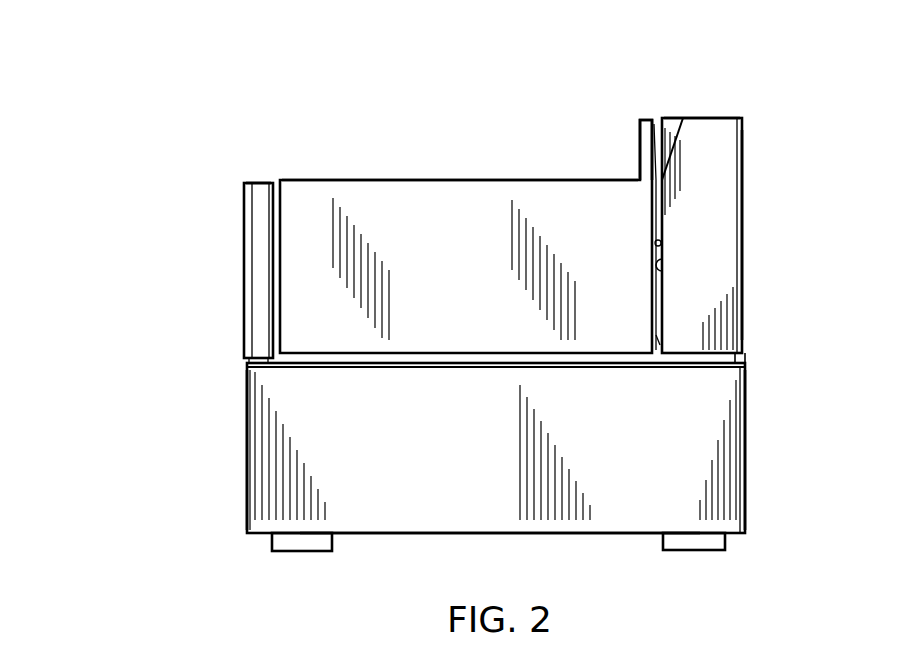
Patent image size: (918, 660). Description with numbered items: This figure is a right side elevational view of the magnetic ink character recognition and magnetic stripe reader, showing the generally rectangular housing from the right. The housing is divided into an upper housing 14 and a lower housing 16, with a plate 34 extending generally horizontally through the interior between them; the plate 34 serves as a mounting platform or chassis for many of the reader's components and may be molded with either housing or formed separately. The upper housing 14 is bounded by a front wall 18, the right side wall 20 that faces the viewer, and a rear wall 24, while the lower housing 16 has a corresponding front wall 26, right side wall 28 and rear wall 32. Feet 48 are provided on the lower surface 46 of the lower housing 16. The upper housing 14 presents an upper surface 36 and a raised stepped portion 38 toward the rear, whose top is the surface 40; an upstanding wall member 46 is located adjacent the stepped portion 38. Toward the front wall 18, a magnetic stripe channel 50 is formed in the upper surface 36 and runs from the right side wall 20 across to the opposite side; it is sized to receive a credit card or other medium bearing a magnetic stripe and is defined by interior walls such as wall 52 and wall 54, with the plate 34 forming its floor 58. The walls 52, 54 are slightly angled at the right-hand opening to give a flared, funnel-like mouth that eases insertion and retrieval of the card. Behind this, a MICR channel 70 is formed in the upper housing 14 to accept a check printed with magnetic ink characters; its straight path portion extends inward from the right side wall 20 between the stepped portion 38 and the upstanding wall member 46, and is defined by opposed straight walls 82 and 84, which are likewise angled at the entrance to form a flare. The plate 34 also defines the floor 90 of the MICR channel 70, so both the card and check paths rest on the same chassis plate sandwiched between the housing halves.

The upper housing 14 is at (718, 199).
The lower housing 16 is at (720, 395).
The front wall 18 is at (250, 298).
The right side wall 20 is at (394, 200).
The rear wall 24 is at (745, 250).
The front wall 26 is at (247, 437).
The right side wall 28 is at (702, 475).
The rear wall 32 is at (745, 430).
The plate 34 is at (720, 360).
The upper surface 36 is at (480, 180).
The stepped portion 38 is at (715, 157).
The surface 40 is at (722, 118).
The upstanding wall member 46 is at (640, 145).
The feet 48 is at (280, 553).
The magnetic stripe channel 50 is at (276, 190).
The wall 52 is at (273, 220).
The wall 54 is at (275, 251).
The floor 58 is at (272, 349).
The MICR channel 70 is at (657, 125).
The straight wall 82 is at (655, 241).
The straight wall 84 is at (664, 268).
The floor 90 is at (658, 335).